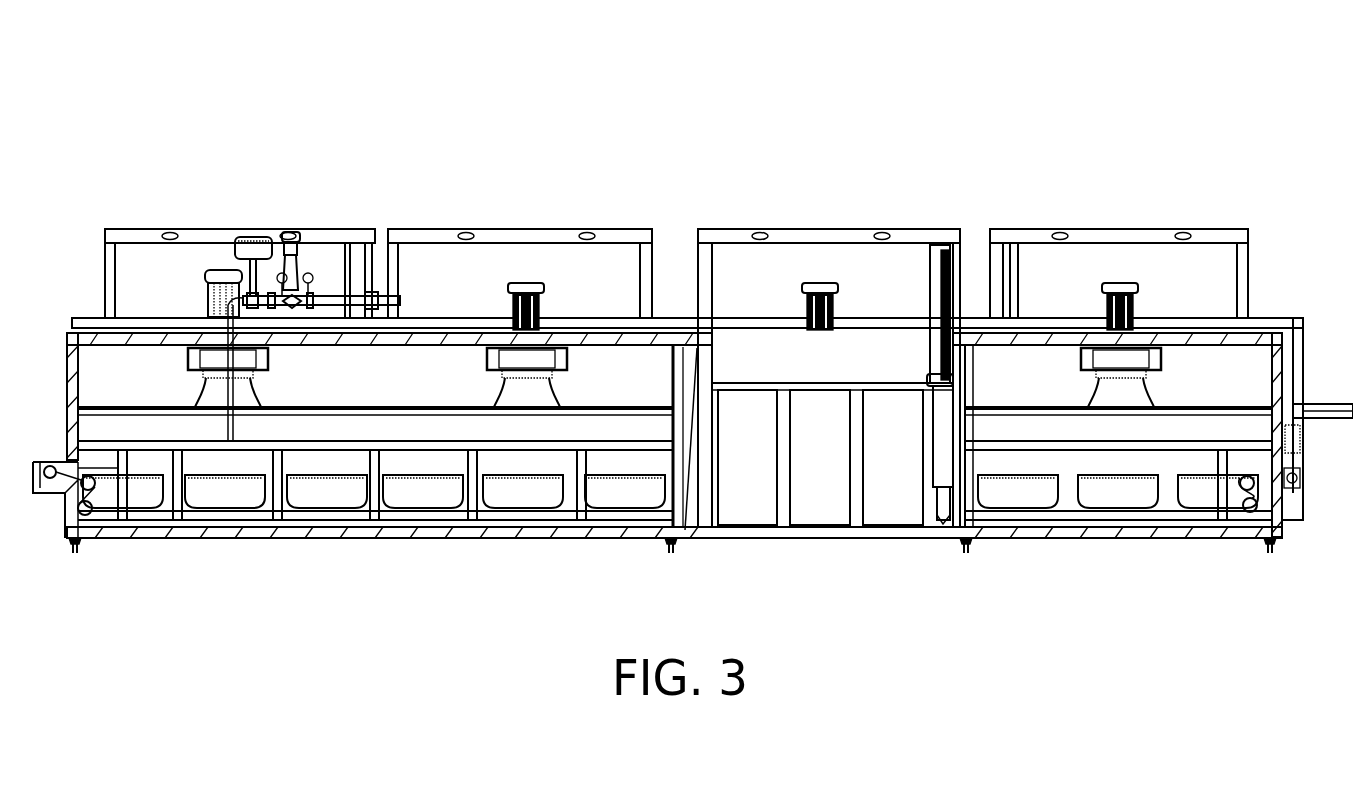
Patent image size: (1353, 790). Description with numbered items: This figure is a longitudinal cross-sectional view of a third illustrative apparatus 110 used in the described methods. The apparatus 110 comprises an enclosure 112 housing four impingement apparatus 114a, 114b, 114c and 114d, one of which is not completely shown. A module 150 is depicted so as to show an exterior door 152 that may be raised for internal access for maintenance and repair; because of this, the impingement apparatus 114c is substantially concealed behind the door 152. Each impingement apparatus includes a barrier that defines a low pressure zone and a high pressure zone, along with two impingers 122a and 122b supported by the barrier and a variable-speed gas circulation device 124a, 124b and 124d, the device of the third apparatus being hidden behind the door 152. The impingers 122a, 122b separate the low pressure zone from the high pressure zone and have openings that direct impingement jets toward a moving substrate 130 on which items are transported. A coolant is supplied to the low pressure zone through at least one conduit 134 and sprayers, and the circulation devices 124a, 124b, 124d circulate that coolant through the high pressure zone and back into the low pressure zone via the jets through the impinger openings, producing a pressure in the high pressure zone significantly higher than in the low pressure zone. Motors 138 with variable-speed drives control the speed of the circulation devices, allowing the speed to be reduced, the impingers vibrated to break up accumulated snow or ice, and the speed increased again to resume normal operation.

The apparatus 110 is at (778, 110).
The enclosure 112 is at (58, 362).
The impingement apparatus 114a is at (274, 364).
The impingement apparatus 114b is at (572, 364).
The impingement apparatus 114c is at (832, 365).
The impingement apparatus 114d is at (1167, 364).
The impinger 122a is at (236, 448).
The impinger 122b is at (316, 476).
The variable-speed gas circulation device 124a is at (190, 369).
The variable-speed gas circulation device 124b is at (488, 369).
The variable-speed gas circulation device 124d is at (1083, 369).
The moving substrate 130 is at (49, 460).
The conduit 134 is at (280, 277).
The motor 138 is at (207, 292).
The module 150 is at (834, 214).
The exterior door 152 is at (884, 495).